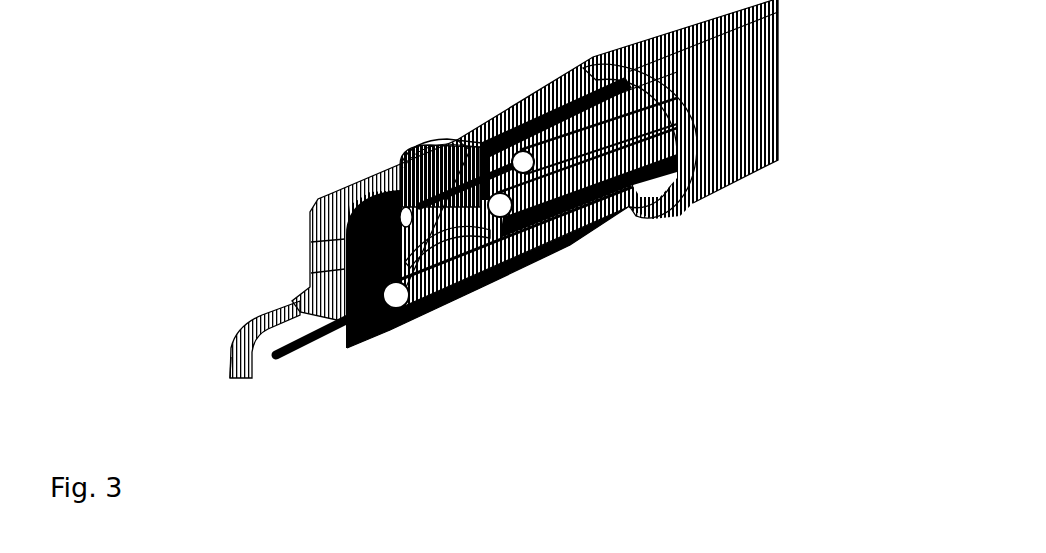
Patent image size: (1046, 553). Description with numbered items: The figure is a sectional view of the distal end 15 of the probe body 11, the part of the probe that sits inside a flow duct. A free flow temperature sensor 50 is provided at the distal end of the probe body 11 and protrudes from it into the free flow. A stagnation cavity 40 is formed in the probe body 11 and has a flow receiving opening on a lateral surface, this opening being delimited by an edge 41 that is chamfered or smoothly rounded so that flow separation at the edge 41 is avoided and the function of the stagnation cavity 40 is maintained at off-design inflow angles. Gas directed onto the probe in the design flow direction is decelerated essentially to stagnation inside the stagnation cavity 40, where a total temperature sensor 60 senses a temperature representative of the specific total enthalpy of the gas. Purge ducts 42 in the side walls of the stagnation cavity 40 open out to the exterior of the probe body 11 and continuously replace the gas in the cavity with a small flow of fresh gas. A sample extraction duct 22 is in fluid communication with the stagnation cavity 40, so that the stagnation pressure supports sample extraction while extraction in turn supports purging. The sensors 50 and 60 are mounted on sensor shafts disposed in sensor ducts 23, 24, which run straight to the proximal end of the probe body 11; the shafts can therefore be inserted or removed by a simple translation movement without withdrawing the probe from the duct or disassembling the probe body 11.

The probe body 11 is at (535, 62).
The distal end region 15 is at (226, 252).
The sample extraction duct 22 is at (498, 201).
The sensor duct 23 is at (400, 298).
The sensor duct 24 is at (533, 165).
The stagnation cavity 40 is at (427, 173).
The edge 41 is at (463, 143).
The purge ducts 42 is at (405, 231).
The free flow temperature sensor 50 is at (281, 359).
The total temperature sensor 60 is at (423, 203).